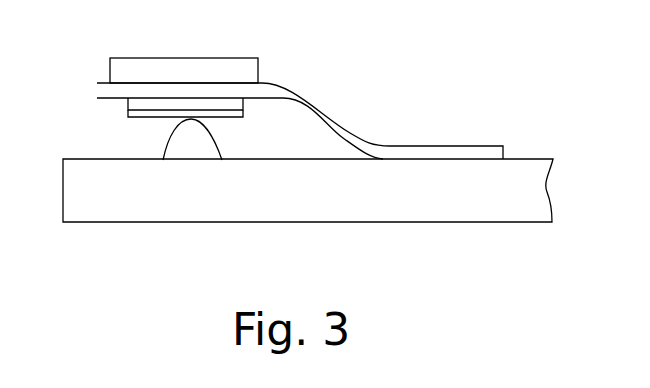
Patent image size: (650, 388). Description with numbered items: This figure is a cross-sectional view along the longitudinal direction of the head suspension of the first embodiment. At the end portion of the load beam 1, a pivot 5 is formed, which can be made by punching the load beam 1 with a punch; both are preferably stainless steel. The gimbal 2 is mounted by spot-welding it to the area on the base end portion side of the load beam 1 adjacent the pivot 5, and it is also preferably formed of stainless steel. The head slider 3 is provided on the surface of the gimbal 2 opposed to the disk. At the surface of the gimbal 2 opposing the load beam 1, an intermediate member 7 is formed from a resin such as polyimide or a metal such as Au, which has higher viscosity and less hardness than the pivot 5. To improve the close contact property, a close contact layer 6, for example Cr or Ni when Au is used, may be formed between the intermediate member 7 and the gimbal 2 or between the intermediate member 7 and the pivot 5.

The load beam 1 is at (396, 208).
The gimbal 2 is at (337, 125).
The head slider 3 is at (222, 66).
The pivot 5 is at (195, 150).
The close contact layer 6 is at (237, 115).
The intermediate member 7 is at (138, 104).